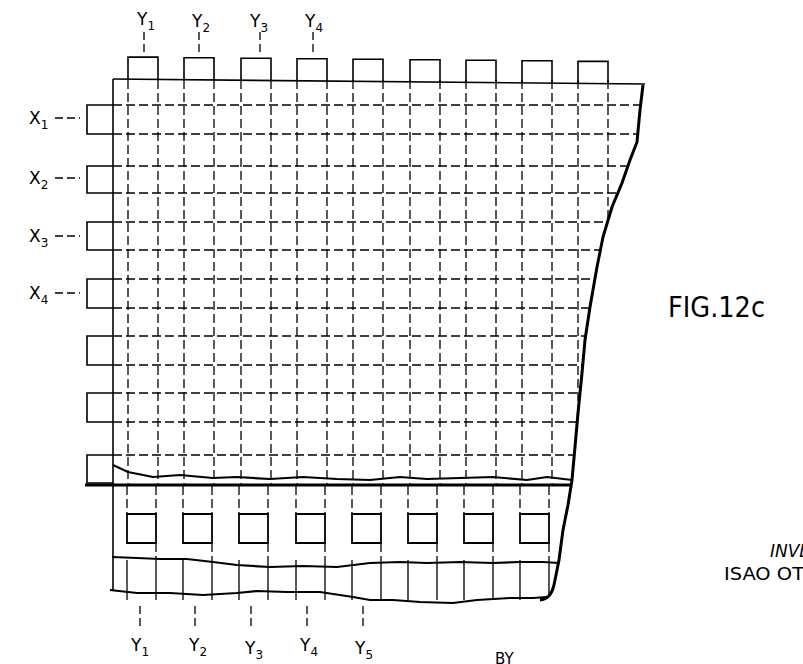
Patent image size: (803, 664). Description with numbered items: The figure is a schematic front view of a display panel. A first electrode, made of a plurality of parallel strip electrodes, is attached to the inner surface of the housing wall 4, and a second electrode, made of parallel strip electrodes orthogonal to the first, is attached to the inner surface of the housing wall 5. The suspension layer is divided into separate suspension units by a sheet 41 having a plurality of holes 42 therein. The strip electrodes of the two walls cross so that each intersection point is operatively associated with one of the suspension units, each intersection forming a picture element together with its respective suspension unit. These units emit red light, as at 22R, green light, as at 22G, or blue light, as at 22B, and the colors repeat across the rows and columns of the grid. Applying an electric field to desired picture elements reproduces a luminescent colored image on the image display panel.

The housing wall 4 is at (113, 441).
The housing wall 5 is at (113, 572).
The sheet 41 is at (113, 530).
The holes 42 is at (538, 517).
The suspension unit emitting green light 22G is at (139, 535).
The suspension unit emitting blue light 22B is at (192, 535).
The suspension unit emitting red light 22R is at (250, 533).